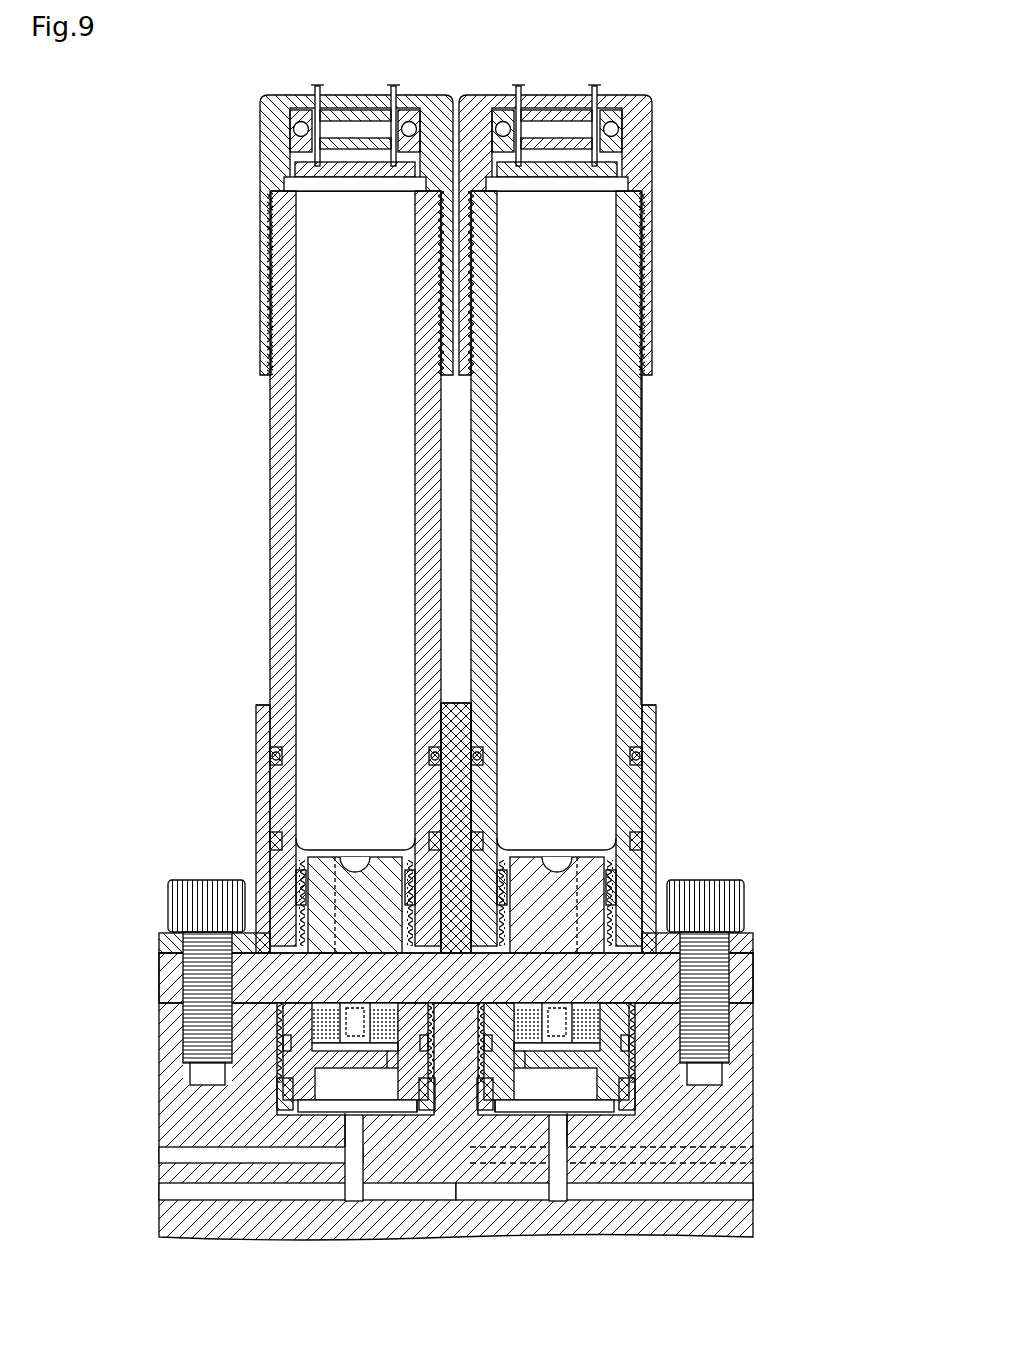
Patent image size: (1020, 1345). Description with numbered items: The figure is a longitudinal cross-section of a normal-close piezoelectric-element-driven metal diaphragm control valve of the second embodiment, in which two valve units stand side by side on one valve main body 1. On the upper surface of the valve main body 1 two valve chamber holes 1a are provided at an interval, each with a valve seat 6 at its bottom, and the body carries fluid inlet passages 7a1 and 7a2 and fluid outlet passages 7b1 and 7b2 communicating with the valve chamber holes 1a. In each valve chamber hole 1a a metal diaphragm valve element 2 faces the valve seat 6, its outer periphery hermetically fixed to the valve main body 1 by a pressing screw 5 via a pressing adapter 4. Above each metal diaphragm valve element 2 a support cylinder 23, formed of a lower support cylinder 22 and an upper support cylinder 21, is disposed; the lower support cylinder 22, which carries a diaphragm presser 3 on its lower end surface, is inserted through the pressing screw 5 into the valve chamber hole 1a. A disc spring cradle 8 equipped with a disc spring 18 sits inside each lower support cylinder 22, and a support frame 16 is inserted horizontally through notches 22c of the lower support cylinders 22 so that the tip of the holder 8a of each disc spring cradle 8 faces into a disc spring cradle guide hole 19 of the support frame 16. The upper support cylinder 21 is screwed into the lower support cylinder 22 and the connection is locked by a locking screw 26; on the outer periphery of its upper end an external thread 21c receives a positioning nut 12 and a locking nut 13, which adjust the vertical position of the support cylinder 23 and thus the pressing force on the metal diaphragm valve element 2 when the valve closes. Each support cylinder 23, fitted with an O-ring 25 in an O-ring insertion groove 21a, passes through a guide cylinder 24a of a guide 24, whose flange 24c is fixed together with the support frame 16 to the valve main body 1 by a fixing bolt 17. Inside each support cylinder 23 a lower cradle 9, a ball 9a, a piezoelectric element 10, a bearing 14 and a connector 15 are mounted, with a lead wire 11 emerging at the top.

The valve main body 1 is at (735, 1057).
The valve chamber hole 1a is at (278, 1090).
The metal diaphragm valve element 2 is at (302, 1112).
The diaphragm presser 3 is at (400, 1054).
The pressing adapter 4 is at (420, 1110).
The pressing screw 5 is at (287, 1055).
The valve seat 6 is at (365, 1090).
The fluid inlet passage 7a1 is at (205, 1157).
The fluid inlet passage 7a2 is at (205, 1192).
The fluid outlet passage 7b1 is at (705, 1159).
The fluid outlet passage 7b2 is at (705, 1192).
The disc spring cradle 8 is at (387, 1072).
The holder 8a is at (357, 1012).
The lower cradle 9 is at (300, 860).
The ball 9a is at (362, 858).
The piezoelectric element 10 is at (345, 496).
The lead wire 11 is at (312, 92).
The positioning nut 12 is at (276, 184).
The locking nut 13 is at (268, 324).
The bearing 14 is at (295, 130).
The connector 15 is at (357, 165).
The support frame 16 is at (165, 962).
The fixing bolt 17 is at (190, 914).
The disc spring 18 is at (284, 1065).
The disc spring cradle guide hole 19 is at (335, 1000).
The upper support cylinder 21 is at (276, 417).
The O-ring insertion groove 21a is at (283, 766).
The external thread 21c is at (282, 250).
The lower support cylinder 22 is at (300, 1042).
The port 22c is at (330, 1114).
The support cylinder 23 is at (648, 599).
The guide 24 is at (660, 798).
The guide cylinder 24a is at (262, 792).
The flange 24c is at (172, 942).
The O-ring 25 is at (278, 758).
The locking screw 26 is at (294, 890).